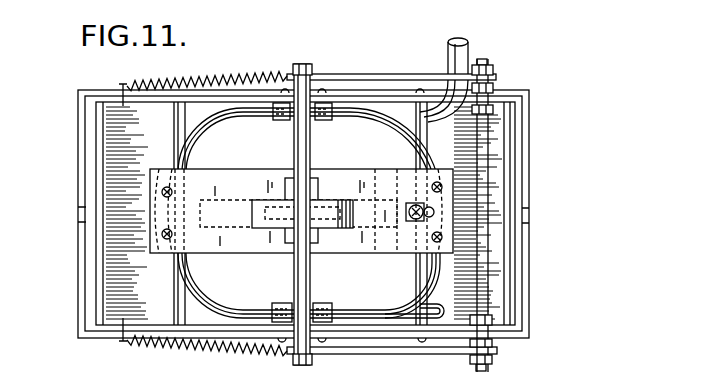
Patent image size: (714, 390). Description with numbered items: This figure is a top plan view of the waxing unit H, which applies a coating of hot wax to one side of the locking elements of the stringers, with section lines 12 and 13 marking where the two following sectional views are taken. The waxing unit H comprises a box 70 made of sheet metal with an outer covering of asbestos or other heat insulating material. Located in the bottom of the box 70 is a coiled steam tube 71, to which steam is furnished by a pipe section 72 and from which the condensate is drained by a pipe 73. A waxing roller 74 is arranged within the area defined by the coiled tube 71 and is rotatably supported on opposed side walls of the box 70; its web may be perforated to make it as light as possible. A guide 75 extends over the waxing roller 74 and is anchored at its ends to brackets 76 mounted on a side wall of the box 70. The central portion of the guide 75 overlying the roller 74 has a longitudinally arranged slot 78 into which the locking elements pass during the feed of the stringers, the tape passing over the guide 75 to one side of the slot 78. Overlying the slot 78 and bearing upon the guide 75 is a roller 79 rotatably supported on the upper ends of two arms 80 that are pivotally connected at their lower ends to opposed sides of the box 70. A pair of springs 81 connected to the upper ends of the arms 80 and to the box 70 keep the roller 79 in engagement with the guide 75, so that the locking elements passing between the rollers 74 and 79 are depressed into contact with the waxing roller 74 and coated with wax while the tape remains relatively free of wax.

The section line 12— 12 is at (59, 258).
The section line 13— 13 is at (303, 40).
The box 70 is at (534, 162).
The coiled steam tube 71 is at (228, 297).
The pipe section 72 is at (467, 44).
The pipe 73 is at (439, 303).
The waxing roller 74 is at (375, 200).
The guide 75 is at (284, 215).
The brackets 76 is at (162, 213).
The slot 78 is at (328, 229).
The roller 79 is at (350, 201).
The arms 80 is at (390, 74).
The springs 81 is at (225, 72).
The waxing unit H is at (532, 78).